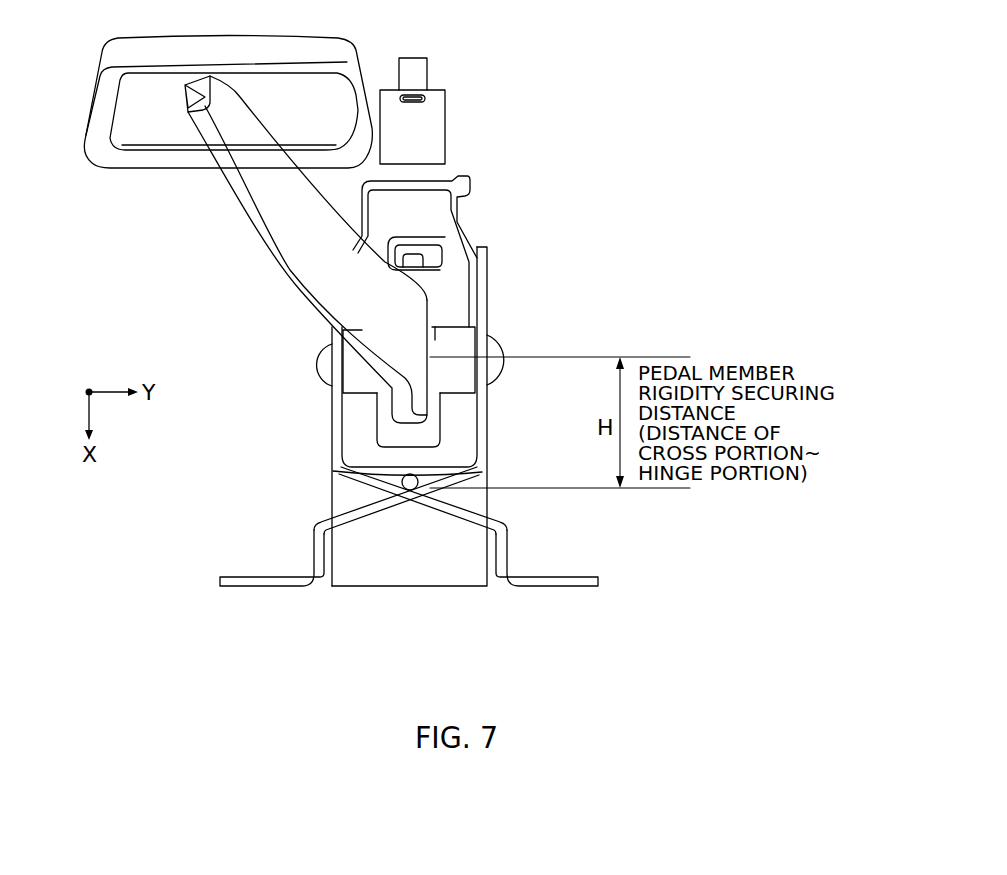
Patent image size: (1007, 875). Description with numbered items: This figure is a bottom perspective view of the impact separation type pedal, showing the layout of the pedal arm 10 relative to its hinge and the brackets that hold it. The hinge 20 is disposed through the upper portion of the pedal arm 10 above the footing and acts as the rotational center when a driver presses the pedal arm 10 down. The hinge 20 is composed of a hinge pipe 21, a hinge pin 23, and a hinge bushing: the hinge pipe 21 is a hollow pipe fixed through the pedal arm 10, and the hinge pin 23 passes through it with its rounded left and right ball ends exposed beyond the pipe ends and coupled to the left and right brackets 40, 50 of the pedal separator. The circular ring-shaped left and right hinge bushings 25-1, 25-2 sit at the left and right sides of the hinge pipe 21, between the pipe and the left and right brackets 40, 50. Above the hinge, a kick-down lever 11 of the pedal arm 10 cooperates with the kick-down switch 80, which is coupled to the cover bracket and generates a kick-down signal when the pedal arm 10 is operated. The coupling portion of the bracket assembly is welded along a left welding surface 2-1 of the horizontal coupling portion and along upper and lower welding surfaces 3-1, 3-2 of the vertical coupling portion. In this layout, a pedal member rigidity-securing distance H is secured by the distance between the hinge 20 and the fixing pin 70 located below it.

The pedal arm 10 is at (227, 192).
The kick-down lever 11 is at (448, 243).
The hinge 20 is at (508, 320).
The hinge pipe 21 is at (448, 337).
The hinge pin 23 is at (473, 333).
The left hinge bushing 25-1 is at (333, 342).
The right hinge bushing 25-2 is at (497, 352).
The left welding surface 2-1 is at (328, 440).
The upper welding surface 3-1 is at (433, 490).
The lower welding surface 3-2 is at (492, 442).
The left bracket 40 is at (388, 573).
The right bracket 50 is at (230, 577).
The fixing pin 70 is at (337, 467).
The kick-down switch 80 is at (425, 113).